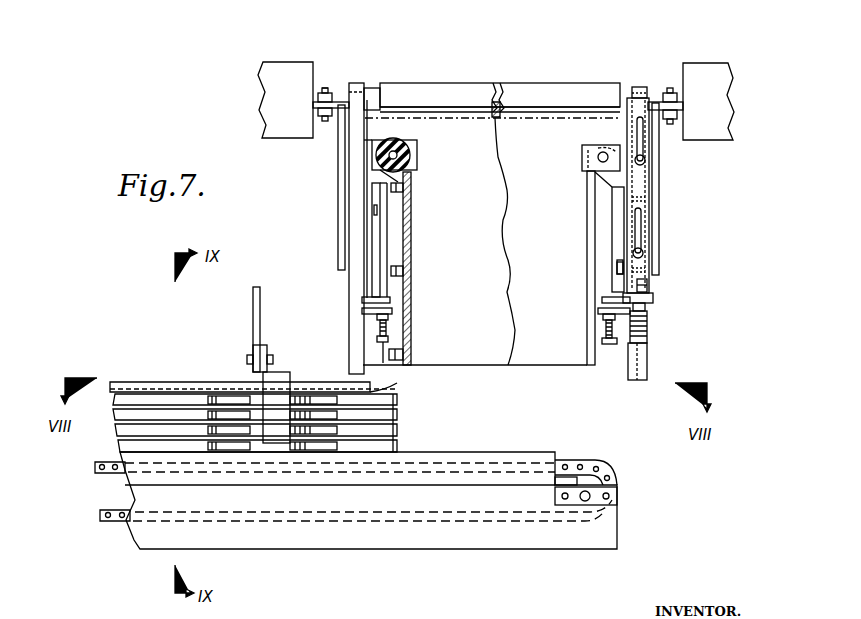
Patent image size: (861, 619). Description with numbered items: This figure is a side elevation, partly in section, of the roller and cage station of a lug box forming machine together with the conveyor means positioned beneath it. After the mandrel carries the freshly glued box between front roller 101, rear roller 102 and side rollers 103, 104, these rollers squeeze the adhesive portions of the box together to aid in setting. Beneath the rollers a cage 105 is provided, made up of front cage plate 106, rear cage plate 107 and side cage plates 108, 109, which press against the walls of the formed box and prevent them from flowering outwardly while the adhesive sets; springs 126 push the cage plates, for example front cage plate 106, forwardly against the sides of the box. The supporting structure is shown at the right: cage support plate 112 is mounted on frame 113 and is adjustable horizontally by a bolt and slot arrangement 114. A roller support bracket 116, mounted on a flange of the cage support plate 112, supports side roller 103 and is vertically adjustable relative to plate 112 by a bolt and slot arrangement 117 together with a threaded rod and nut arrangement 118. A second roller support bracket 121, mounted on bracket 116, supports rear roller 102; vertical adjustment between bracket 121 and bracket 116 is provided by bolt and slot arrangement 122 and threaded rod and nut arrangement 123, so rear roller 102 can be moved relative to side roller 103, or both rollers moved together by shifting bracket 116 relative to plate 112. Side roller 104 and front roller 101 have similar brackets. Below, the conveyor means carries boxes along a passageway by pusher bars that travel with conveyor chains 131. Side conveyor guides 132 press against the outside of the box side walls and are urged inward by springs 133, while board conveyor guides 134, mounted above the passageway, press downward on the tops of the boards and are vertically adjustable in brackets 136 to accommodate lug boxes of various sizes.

The front roller 101 is at (398, 141).
The rear roller 102 is at (597, 145).
The side roller 103 is at (578, 92).
The side roller 104 is at (440, 92).
The cage 105 is at (665, 210).
The front cage plate 106 is at (411, 228).
The rear cage plate 107 is at (587, 216).
The side cage plate 108 is at (535, 362).
The side cage plate 109 is at (461, 362).
The cage support plate 112 is at (658, 152).
The frame 113 is at (722, 100).
The bolt and slot arrangement 114 is at (668, 90).
The roller support bracket 116 is at (647, 368).
The bolt and slot arrangement 117 is at (645, 161).
The threaded rod and nut arrangement 118 is at (640, 333).
The roller support bracket 121 is at (617, 256).
The bolt and slot arrangement 122 is at (617, 268).
The threaded rod and nut arrangement 123 is at (603, 338).
The springs 126 is at (398, 350).
The conveyor chains 131 is at (580, 460).
The side conveyor guides 132 is at (186, 430).
The springs 133 is at (325, 420).
The board conveyor guides 134 is at (132, 382).
The brackets 136 is at (250, 354).